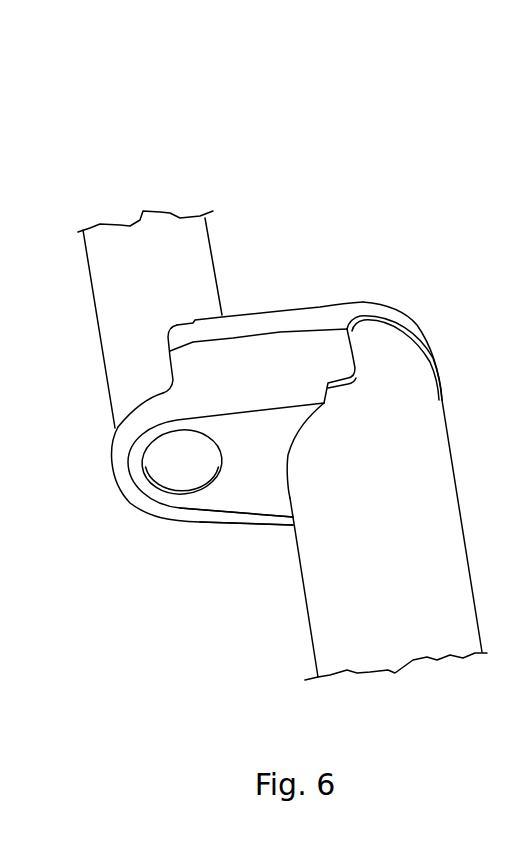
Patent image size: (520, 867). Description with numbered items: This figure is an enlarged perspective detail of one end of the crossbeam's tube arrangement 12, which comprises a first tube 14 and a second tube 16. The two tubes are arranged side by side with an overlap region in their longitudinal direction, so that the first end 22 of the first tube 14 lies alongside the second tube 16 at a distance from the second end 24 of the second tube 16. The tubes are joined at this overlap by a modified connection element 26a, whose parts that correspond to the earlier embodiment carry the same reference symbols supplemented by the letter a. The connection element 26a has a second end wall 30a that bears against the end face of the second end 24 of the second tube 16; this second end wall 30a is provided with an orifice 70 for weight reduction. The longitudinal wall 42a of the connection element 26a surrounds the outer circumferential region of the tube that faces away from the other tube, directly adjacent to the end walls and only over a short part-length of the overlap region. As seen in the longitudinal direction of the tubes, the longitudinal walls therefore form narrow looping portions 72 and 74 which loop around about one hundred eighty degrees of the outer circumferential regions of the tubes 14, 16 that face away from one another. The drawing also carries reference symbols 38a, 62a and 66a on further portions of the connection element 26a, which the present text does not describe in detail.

The tube arrangement 12 is at (474, 148).
The first tube 14 is at (437, 567).
The second tube 16 is at (107, 267).
The first end 22 is at (426, 386).
The second end 24 is at (117, 421).
The connection element 26a is at (321, 290).
The second end wall 30a is at (252, 482).
The side wall 38a is at (285, 457).
The longitudinal wall 42a is at (280, 365).
The flange 62a is at (227, 330).
The face of clip body 66a is at (225, 383).
The orifice 70 is at (163, 497).
The looping portion 72 is at (118, 466).
The looping portion 74 is at (387, 313).